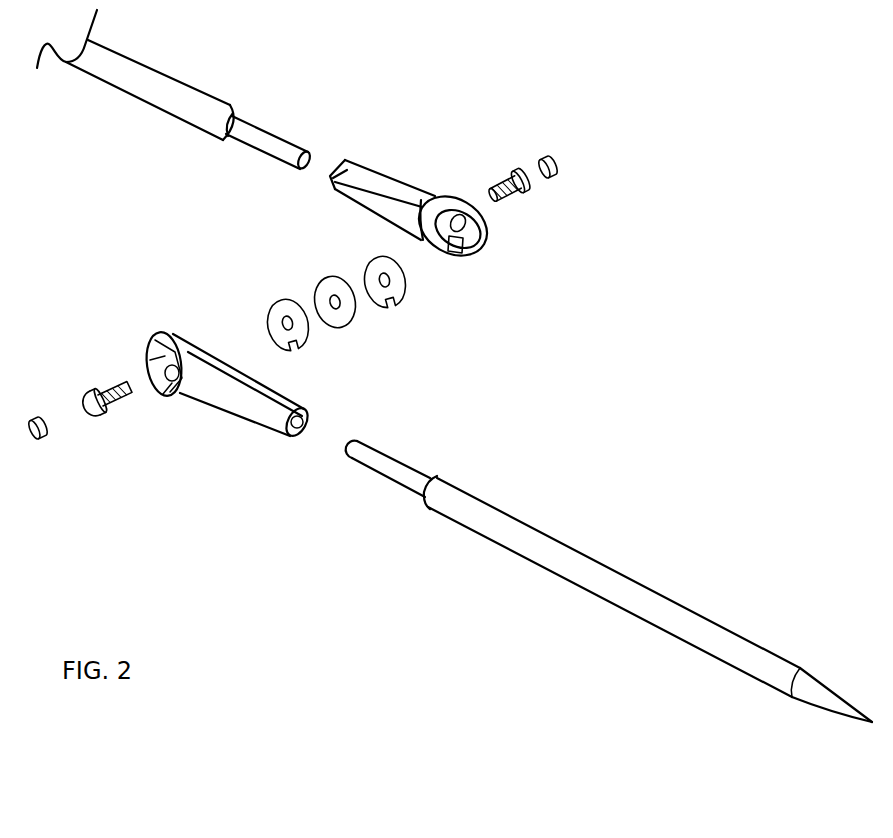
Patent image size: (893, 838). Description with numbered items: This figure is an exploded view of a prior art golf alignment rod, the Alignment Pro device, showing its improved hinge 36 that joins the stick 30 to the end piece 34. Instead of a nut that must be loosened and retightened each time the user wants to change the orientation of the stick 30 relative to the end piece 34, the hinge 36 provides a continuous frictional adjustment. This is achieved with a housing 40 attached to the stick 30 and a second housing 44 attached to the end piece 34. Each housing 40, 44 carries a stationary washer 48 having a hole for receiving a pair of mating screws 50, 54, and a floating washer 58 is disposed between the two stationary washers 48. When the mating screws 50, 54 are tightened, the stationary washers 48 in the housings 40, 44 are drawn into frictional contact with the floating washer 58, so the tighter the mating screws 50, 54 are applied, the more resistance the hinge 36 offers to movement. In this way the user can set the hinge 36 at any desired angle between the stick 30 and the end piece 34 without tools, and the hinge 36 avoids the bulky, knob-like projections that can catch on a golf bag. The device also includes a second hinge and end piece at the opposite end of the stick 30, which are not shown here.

The stick 30 is at (178, 85).
The end piece 34 is at (473, 520).
The hinge 36 is at (590, 420).
The housing 40 is at (405, 190).
The housing 44 is at (225, 405).
The stationary washer 48 is at (307, 345).
The mating screw 50 is at (527, 197).
The mating screw 54 is at (107, 380).
The floating washer 58 is at (318, 283).